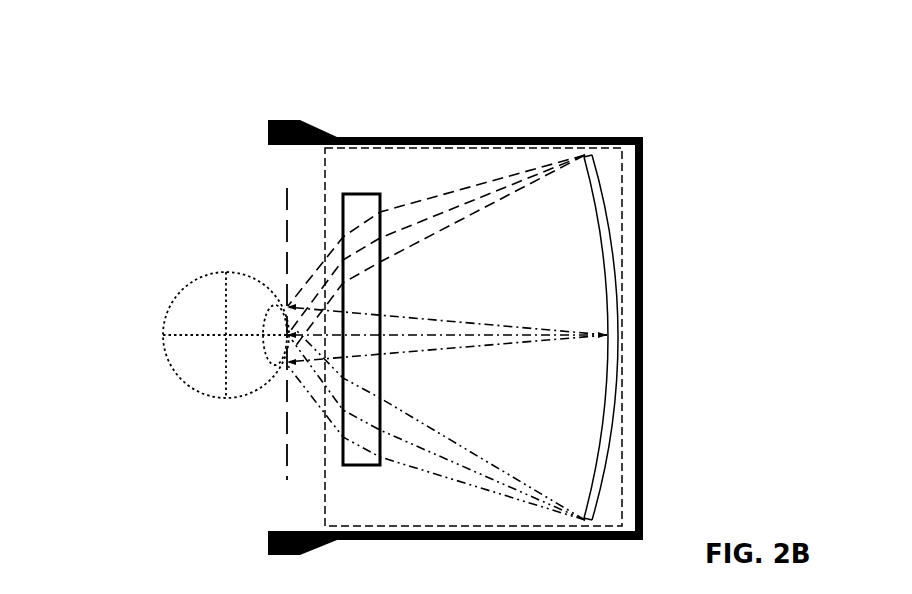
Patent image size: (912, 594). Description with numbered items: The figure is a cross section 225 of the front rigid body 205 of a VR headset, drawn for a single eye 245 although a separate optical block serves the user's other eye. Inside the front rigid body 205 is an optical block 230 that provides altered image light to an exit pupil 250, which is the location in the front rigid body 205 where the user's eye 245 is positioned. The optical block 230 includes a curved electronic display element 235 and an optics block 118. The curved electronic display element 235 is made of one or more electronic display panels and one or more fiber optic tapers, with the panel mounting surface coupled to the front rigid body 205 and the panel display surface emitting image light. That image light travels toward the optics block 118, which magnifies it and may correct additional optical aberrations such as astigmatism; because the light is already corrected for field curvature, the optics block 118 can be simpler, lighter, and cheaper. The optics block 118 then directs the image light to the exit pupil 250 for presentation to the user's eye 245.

The cross section 225 is at (63, 30).
The front rigid body 205 is at (613, 130).
The optical block 230 is at (314, 443).
The optics block 118 is at (336, 200).
The curved electronic display element 235 is at (620, 204).
The exit pupil 250 is at (269, 468).
The eye 245 is at (188, 273).